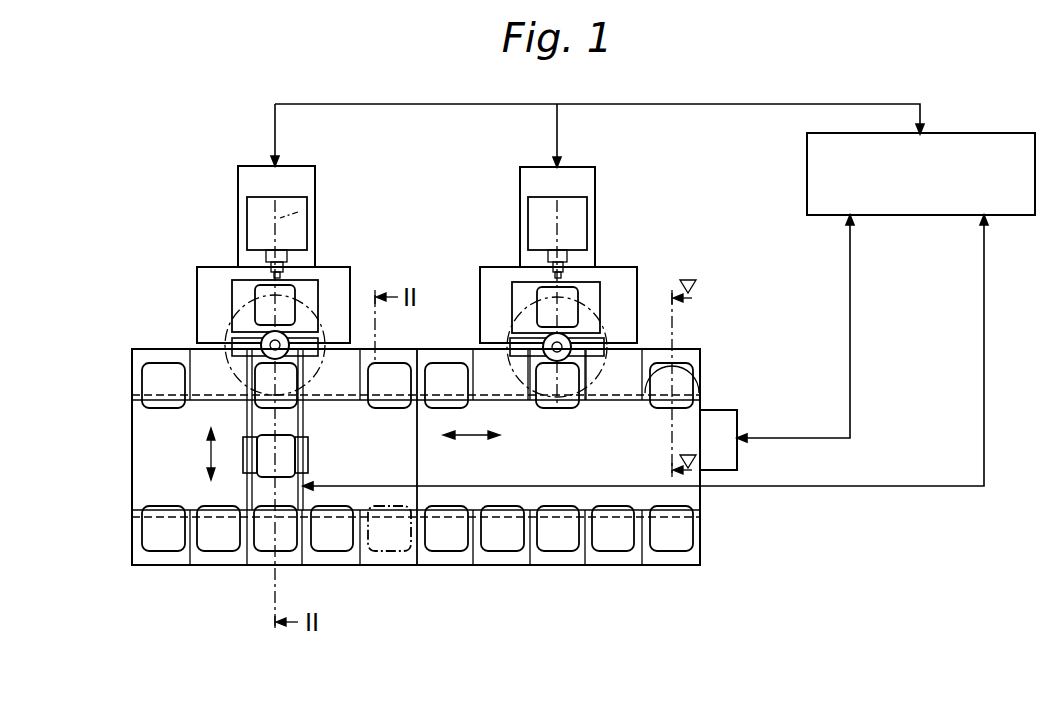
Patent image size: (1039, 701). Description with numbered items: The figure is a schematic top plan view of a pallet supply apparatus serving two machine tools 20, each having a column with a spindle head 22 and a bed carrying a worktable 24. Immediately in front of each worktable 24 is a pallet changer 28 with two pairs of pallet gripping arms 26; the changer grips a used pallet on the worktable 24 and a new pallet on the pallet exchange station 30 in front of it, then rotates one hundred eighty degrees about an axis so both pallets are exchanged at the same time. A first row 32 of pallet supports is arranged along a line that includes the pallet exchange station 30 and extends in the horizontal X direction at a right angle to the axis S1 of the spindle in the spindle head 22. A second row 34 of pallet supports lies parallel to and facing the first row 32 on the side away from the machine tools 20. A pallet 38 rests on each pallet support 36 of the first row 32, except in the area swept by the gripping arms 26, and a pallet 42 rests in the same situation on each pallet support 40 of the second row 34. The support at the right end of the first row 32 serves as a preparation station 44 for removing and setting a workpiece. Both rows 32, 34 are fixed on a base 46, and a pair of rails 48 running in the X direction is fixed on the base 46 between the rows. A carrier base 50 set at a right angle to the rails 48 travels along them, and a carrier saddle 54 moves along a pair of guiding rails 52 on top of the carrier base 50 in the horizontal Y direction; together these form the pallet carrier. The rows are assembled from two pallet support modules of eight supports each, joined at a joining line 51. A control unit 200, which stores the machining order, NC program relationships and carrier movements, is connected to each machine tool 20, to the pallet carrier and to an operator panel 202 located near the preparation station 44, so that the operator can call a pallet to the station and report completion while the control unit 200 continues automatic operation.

The machine tool 20 is at (458, 207).
The axis of spindle S1 is at (298, 212).
The spindle head 22 is at (288, 255).
The worktable 24 is at (312, 283).
The pallet gripping arms 26 is at (267, 341).
The pallet changer 28 is at (263, 333).
The pallet exchange station 30 is at (266, 390).
The first row of pallet supports 32 is at (125, 395).
The second row of pallet supports 34 is at (125, 524).
The pallet support 36 is at (145, 357).
The pallet 38 is at (263, 293).
The pallet support 40 is at (200, 555).
The pallet 42 is at (218, 522).
The preparation station 44 is at (700, 358).
The base 46 is at (148, 472).
The rails 48 is at (607, 402).
The carrier base 50 is at (302, 495).
The joining line 51 is at (418, 478).
The guiding rails 52 is at (253, 420).
The carrier saddle 54 is at (250, 463).
The control unit 200 is at (1012, 218).
The operator panel 202 is at (737, 458).